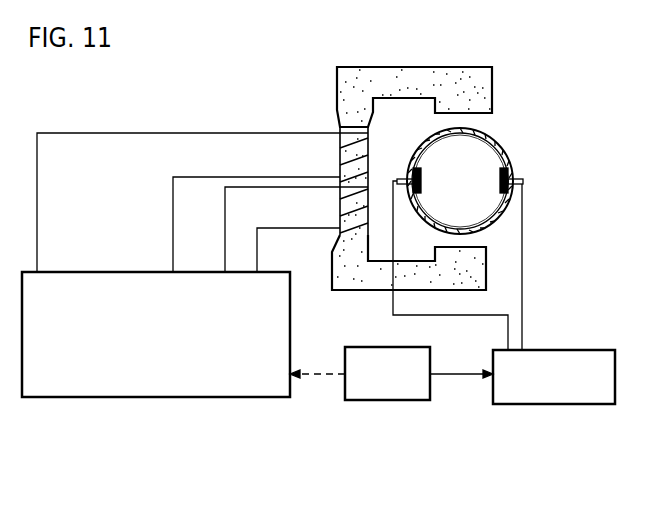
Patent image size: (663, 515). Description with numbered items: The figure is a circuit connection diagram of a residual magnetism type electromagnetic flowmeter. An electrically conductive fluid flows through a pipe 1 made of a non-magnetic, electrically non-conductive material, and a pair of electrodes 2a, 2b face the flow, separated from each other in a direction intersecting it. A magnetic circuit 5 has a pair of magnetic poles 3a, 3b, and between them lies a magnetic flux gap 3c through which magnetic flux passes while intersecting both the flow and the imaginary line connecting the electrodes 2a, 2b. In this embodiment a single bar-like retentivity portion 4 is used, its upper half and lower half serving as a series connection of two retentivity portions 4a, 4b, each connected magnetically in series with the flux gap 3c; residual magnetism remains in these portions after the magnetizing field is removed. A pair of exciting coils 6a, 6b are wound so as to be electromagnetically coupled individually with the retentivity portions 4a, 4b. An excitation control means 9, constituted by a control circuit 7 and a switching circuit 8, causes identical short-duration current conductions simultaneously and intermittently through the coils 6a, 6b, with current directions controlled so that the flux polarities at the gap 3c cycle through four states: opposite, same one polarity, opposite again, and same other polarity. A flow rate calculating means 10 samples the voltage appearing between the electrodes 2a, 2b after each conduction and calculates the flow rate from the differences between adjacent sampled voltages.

The pipe 1 is at (499, 139).
The electrode 2a is at (422, 184).
The electrode 2b is at (500, 175).
The magnetic pole 3a is at (469, 114).
The magnetic pole 3b is at (480, 247).
The magnetic flux gap 3c is at (464, 182).
The bar-like retentivity portion 4 is at (310, 150).
The retentivity portion 4a is at (338, 158).
The retentivity portion 4b is at (340, 204).
The magnetic circuit 5 is at (435, 80).
The exciting coil 6a is at (368, 157).
The exciting coil 6b is at (368, 208).
The control circuit 7 is at (288, 466).
The switching circuit 8 is at (283, 401).
The excitation control means 9 is at (257, 388).
The flow rate calculating means 10 is at (517, 405).